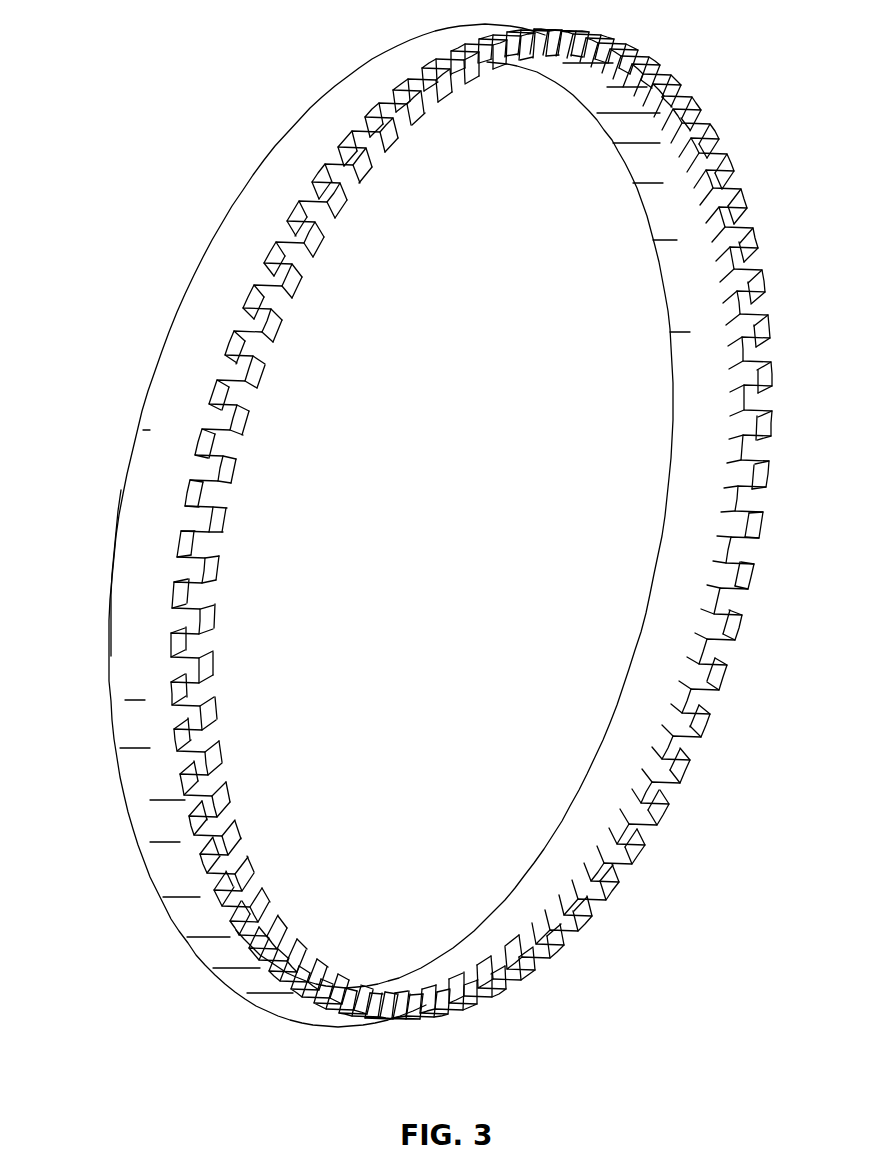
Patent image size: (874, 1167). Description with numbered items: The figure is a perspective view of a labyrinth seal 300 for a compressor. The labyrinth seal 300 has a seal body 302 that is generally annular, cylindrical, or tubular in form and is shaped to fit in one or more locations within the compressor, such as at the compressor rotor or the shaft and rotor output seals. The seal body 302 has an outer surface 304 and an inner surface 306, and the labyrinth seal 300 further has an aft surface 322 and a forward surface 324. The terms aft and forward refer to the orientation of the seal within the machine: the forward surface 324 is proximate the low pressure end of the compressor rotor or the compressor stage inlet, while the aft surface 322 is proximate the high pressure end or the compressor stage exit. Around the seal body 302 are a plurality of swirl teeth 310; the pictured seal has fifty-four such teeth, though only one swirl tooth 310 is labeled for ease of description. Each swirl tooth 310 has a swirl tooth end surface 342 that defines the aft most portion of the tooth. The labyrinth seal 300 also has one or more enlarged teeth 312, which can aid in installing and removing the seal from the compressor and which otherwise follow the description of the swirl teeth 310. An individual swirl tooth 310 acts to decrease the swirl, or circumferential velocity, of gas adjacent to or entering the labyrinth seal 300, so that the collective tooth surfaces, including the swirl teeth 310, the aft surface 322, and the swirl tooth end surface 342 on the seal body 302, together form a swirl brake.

The labyrinth seal 300 is at (112, 50).
The seal body 302 is at (140, 584).
The outer surface 304 is at (163, 715).
The inner surface 306 is at (684, 557).
The swirl tooth 310 is at (708, 652).
The enlarged tooth 312 is at (742, 548).
The aft surface 322 is at (203, 437).
The forward surface 324 is at (152, 380).
The swirl tooth end surface 342 is at (206, 613).